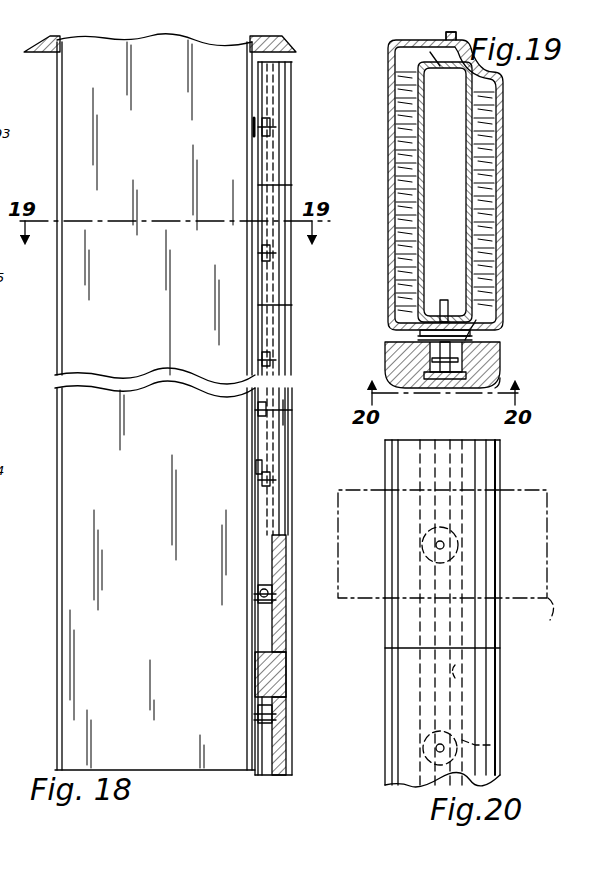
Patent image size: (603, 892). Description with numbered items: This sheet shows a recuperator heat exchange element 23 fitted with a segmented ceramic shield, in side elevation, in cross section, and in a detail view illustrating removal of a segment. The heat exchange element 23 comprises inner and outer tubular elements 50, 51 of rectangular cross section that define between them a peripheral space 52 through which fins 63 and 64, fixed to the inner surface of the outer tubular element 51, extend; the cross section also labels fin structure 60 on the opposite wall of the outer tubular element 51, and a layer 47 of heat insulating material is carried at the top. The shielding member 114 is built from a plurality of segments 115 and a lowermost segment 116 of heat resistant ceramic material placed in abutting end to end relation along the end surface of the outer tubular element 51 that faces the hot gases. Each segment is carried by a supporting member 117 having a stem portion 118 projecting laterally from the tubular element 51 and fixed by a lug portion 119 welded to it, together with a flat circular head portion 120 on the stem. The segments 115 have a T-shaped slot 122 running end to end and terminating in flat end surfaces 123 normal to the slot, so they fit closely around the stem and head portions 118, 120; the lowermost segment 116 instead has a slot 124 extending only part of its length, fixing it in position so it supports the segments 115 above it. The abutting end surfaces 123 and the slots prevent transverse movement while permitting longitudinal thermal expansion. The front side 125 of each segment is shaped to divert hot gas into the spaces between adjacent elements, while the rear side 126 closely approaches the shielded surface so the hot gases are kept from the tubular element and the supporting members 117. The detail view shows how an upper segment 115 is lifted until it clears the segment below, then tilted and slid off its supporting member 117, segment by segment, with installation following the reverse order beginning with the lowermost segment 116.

In FIG. 18, the heat exchange element 23 is at (166, 316).
In FIG. 19, the heat exchange element 23 is at (503, 152).
In FIG. 18, the layer of heat insulating material 47 is at (288, 50).
In FIG. 19, the inner tubular element 50 is at (424, 228).
In FIG. 18, the outer tubular element 51 is at (70, 515).
In FIG. 19, the outer tubular element 51 is at (390, 222).
In FIG. 19, the peripheral space 52 is at (498, 240).
In FIG. 19, the fins 60 is at (486, 199).
In FIG. 19, the fins 63 is at (412, 50).
In FIG. 19, the fins 64 is at (400, 146).
In FIG. 18, the shielding member 114 is at (289, 448).
In FIG. 19, the shielding member 114 is at (501, 354).
In FIG. 20, the shielding member 114 is at (384, 672).
In FIG. 18, the segments 115 is at (288, 150).
In FIG. 20, the segments 115 is at (495, 616).
In FIG. 18, the lowermost segment 116 is at (287, 705).
In FIG. 18, the supporting member 117 is at (262, 125).
In FIG. 19, the supporting member 117 is at (480, 350).
In FIG. 20, the supporting member 117 is at (470, 525).
In FIG. 18, the stem portion 118 is at (246, 137).
In FIG. 19, the stem portion 118 is at (420, 340).
In FIG. 20, the stem portion 118 is at (448, 740).
In FIG. 18, the lug portion 119 is at (258, 467).
In FIG. 19, the lug portion 119 is at (420, 333).
In FIG. 18, the head portion 120 is at (273, 600).
In FIG. 19, the head portion 120 is at (452, 375).
In FIG. 20, the head portion 120 is at (458, 542).
In FIG. 18, the slot 122 is at (268, 642).
In FIG. 19, the slot 122 is at (435, 380).
In FIG. 20, the slot 122 is at (457, 678).
In FIG. 18, the flat end surfaces 123 is at (260, 412).
In FIG. 20, the flat end surfaces 123 is at (385, 648).
In FIG. 18, the slot 124 is at (270, 744).
In FIG. 19, the front side 125 is at (510, 387).
In FIG. 19, the rear side 126 is at (476, 340).